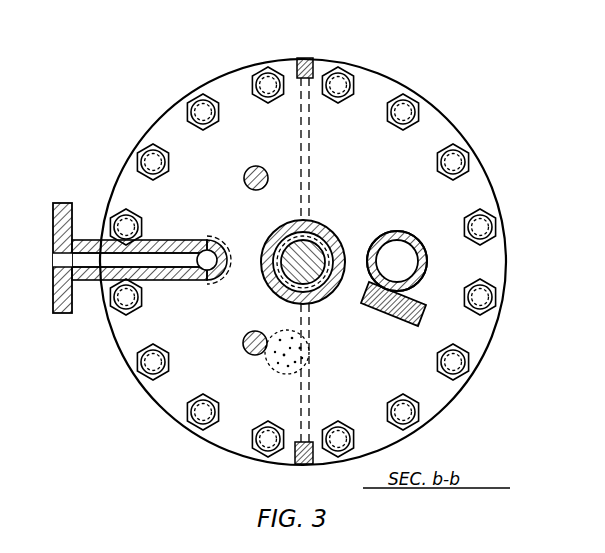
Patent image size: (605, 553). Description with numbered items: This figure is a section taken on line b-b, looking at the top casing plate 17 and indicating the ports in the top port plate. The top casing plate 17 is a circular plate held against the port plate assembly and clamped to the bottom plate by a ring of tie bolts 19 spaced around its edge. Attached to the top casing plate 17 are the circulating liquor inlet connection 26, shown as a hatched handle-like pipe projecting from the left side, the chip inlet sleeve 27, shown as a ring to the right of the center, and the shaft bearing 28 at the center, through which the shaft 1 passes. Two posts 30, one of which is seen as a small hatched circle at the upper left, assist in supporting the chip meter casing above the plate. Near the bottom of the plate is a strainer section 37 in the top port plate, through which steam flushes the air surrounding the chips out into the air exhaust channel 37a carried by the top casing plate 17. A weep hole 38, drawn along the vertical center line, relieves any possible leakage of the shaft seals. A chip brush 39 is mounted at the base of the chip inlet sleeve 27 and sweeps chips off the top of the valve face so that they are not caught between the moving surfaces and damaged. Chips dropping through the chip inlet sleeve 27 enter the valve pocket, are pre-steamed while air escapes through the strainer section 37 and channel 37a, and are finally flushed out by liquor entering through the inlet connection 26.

The shaft 1 is at (311, 250).
The top casing plate 17 is at (443, 113).
The tie bolts 19 is at (352, 80).
The circulating liquor inlet connection 26 is at (103, 281).
The chip inlet sleeve 27 is at (420, 233).
The shaft bearing 28 is at (318, 232).
The posts 30 is at (247, 170).
The strainer section 37 is at (270, 367).
The air exhaust channel 37a is at (293, 400).
The weep hole 38 is at (298, 80).
The chip brush 39 is at (420, 310).